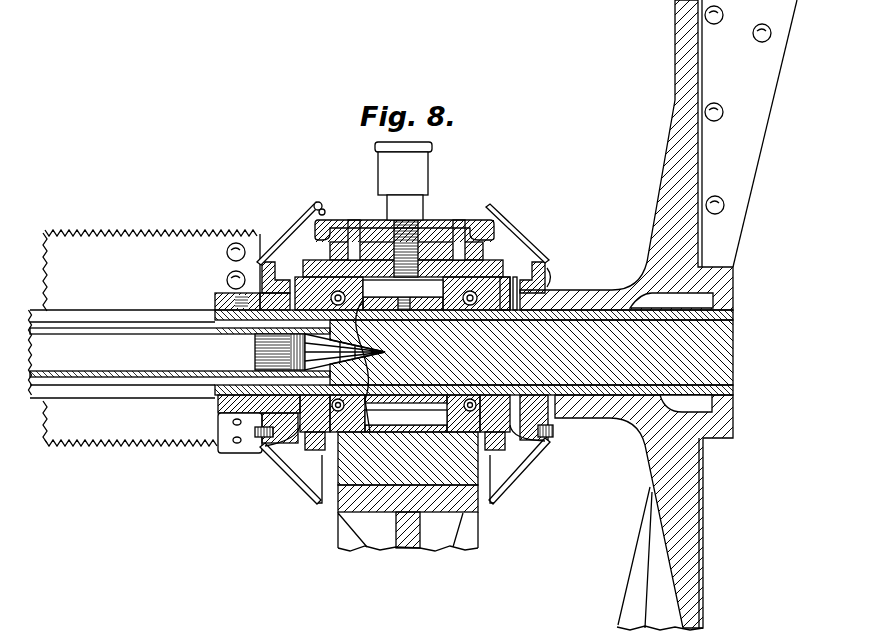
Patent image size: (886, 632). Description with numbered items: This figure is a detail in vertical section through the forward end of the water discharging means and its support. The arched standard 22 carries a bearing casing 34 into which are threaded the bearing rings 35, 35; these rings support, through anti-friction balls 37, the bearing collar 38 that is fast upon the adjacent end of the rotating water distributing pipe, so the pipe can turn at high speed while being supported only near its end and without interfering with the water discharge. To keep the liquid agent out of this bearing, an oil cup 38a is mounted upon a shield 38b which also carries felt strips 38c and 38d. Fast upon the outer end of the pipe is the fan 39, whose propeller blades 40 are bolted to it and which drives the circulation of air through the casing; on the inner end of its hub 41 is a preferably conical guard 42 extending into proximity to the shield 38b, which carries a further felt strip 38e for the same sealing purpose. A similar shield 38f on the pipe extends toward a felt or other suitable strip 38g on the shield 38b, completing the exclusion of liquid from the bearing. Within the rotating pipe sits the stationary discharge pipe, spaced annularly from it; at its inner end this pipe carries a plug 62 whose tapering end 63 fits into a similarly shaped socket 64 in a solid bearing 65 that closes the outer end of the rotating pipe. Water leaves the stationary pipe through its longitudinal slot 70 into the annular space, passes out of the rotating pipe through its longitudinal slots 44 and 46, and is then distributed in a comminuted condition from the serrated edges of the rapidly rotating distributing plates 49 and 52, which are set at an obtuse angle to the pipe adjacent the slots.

The standard 22 is at (428, 472).
The bearing casing 34 is at (338, 466).
The bearing rings 35 is at (272, 452).
The anti-friction balls 37 is at (288, 290).
The bearing collar 38 is at (407, 400).
The oil cup 38a is at (417, 167).
The shield 38b is at (433, 220).
The felt strip 38c is at (537, 262).
The felt strip 38d is at (275, 246).
The felt strip 38e is at (494, 207).
The shield 38f is at (312, 204).
The felt strip 38g is at (325, 211).
The fan 39 is at (657, 234).
The propeller blades 40 is at (755, 122).
The hub 41 is at (562, 292).
The conical guard 42 is at (513, 277).
The longitudinal slot 44 is at (79, 318).
The longitudinal slot 46 is at (157, 391).
The distributing plate 49 is at (82, 247).
The distributing plate 52 is at (112, 432).
The plug 62 is at (268, 351).
The tapering end 63 is at (358, 320).
The socket 64 is at (368, 399).
The solid bearing 65 is at (735, 353).
The longitudinal slot 70 is at (134, 333).